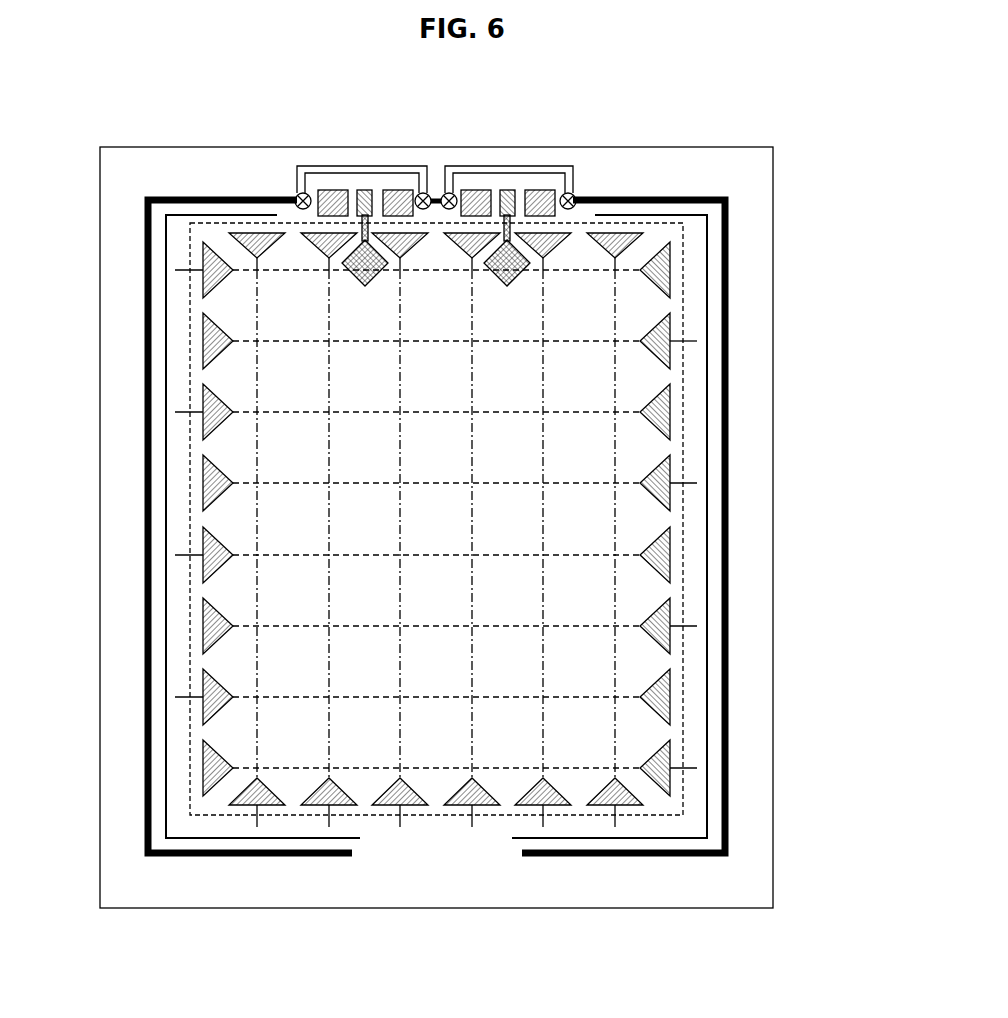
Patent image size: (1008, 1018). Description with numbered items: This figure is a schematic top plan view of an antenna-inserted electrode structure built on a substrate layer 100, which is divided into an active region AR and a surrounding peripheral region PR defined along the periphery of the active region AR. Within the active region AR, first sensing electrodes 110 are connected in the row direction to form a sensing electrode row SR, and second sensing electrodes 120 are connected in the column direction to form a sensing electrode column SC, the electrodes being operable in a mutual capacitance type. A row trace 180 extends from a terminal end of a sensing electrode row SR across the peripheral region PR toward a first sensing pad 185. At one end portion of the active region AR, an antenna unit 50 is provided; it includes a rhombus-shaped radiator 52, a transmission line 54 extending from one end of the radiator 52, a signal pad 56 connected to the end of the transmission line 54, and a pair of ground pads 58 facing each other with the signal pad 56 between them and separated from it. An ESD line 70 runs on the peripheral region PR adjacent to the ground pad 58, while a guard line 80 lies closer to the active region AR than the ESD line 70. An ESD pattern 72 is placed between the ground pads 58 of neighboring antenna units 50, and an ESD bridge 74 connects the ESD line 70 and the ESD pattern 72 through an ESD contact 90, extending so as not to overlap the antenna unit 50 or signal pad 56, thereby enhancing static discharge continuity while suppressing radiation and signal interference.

The substrate layer 100 is at (753, 832).
The ESD line 70 is at (145, 408).
The guard line 80 is at (166, 480).
The first sensing electrodes 110 is at (663, 413).
The second sensing electrodes 120 is at (637, 228).
The row trace 180 is at (693, 341).
The first sensing pad 185 is at (618, 820).
The antenna unit 50 is at (523, 180).
The radiator 52 is at (343, 262).
The transmission line 54 is at (360, 228).
The signal pad 56 is at (365, 190).
The ground pad 58 is at (332, 190).
The ESD pattern 72 is at (437, 198).
The ESD bridge 74 is at (502, 170).
The ESD contact 90 is at (570, 193).
The sensing electrode row SR is at (624, 413).
The sensing electrode column SC is at (615, 530).
The peripheral region PR is at (752, 602).
The active region AR is at (690, 666).